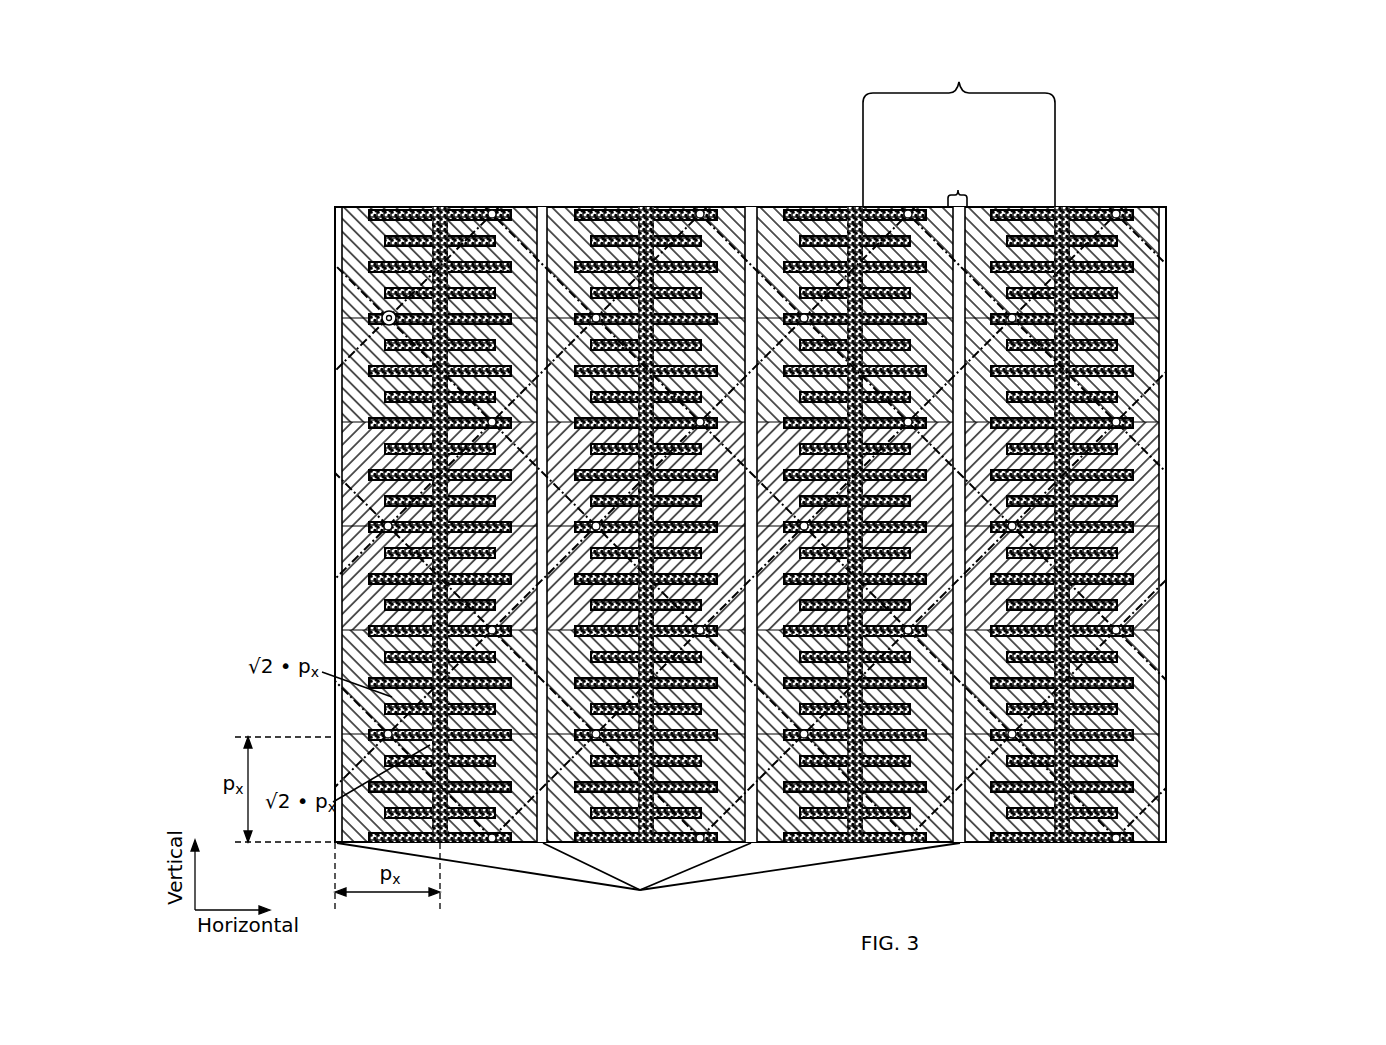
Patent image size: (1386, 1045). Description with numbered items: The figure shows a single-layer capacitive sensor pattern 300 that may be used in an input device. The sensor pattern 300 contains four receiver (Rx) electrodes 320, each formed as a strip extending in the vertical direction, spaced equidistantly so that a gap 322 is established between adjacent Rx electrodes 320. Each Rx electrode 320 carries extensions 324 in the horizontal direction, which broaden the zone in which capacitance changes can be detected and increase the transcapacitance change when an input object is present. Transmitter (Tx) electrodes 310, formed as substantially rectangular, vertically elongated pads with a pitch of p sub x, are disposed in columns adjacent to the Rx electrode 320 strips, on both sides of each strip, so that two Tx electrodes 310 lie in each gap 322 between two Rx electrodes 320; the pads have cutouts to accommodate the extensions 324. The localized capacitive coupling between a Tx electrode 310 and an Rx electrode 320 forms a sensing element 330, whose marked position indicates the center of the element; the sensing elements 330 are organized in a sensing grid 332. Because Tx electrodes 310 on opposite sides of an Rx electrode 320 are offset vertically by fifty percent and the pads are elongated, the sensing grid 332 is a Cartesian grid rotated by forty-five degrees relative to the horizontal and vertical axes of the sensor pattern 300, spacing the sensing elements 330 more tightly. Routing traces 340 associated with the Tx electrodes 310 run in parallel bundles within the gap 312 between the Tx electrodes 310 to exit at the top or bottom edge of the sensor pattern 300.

The sensor pattern 300 is at (1232, 94).
The transmitter (Tx) electrodes 310 is at (355, 635).
The gap between Tx electrodes 312 is at (957, 159).
The receiver (Rx) electrodes 320 is at (850, 212).
The gap between Rx electrodes 322 is at (958, 118).
The extensions 324 is at (1118, 294).
The sensing element 330 is at (385, 312).
The sensing grid 332 is at (1128, 598).
The routing traces 340 is at (648, 892).